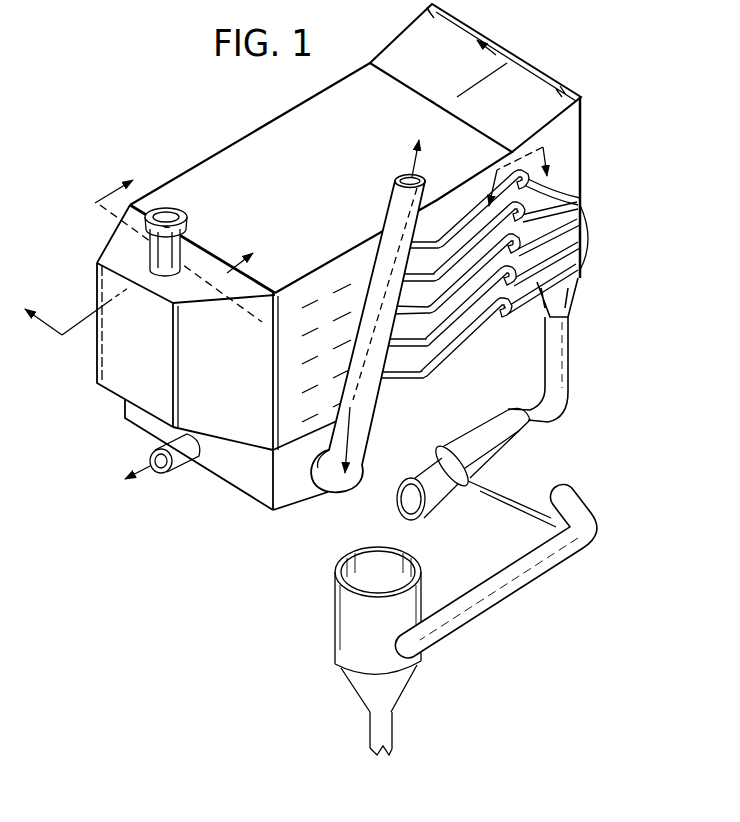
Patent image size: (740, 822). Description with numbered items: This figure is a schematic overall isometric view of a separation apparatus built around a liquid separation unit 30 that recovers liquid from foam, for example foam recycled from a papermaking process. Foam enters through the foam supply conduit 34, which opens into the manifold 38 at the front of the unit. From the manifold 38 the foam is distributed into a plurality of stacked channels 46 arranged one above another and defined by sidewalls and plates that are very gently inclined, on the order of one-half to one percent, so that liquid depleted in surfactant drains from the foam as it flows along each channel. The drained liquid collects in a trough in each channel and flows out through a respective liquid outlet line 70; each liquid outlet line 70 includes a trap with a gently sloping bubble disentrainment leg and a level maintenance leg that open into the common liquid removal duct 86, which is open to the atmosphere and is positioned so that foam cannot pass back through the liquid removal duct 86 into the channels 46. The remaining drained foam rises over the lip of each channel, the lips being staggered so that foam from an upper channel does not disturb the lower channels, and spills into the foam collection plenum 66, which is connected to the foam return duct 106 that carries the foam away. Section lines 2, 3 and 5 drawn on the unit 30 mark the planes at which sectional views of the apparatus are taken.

The liquid separation unit 30 is at (226, 124).
The foam supply conduit 34 is at (147, 255).
The manifold 38 is at (95, 377).
The stacked channels 46 is at (292, 313).
The foam collection plenum 66 is at (580, 296).
The liquid outlet line 70 is at (594, 254).
The liquid removal duct 86 is at (393, 198).
The foam return duct 106 is at (568, 380).
The section line 2- 2 is at (273, 189).
The section line 3- 3 is at (517, 175).
The section line 5- 5 is at (181, 227).